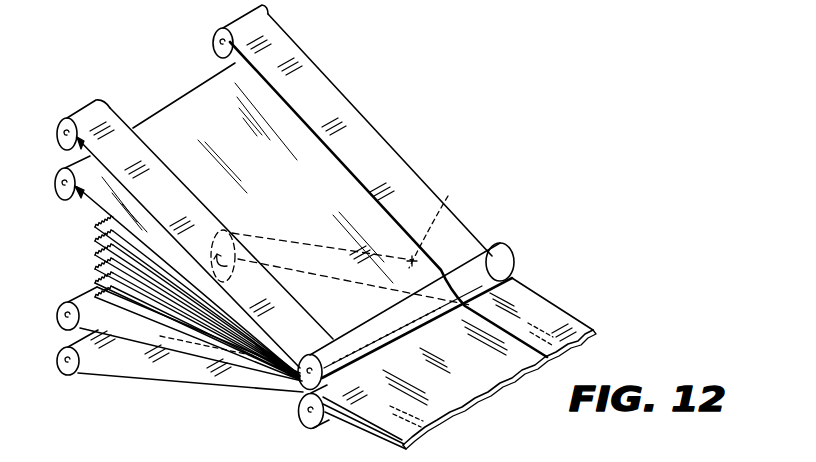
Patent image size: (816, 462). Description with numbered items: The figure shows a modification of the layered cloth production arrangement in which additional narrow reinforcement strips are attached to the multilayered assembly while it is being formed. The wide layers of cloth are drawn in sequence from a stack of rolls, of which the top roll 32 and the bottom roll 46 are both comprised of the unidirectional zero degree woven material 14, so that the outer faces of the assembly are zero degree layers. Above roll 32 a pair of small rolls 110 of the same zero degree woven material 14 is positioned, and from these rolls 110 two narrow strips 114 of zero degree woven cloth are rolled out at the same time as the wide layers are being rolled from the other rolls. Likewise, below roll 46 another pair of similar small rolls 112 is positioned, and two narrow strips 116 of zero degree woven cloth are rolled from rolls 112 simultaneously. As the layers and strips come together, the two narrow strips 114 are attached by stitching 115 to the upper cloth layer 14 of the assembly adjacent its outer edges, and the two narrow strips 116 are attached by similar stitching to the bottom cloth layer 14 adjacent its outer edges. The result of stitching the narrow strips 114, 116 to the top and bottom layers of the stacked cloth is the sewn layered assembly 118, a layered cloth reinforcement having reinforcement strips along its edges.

The small rolls 110 is at (214, 44).
The narrow strips 114 is at (165, 178).
The top roll 32 is at (58, 199).
The bottom roll 46 is at (58, 317).
The small rolls 112 is at (70, 377).
The narrow strips 116 is at (448, 199).
The sewn layered assembly 118 is at (532, 268).
The stitching 115 is at (390, 397).
The 0° woven material 14 is at (496, 379).